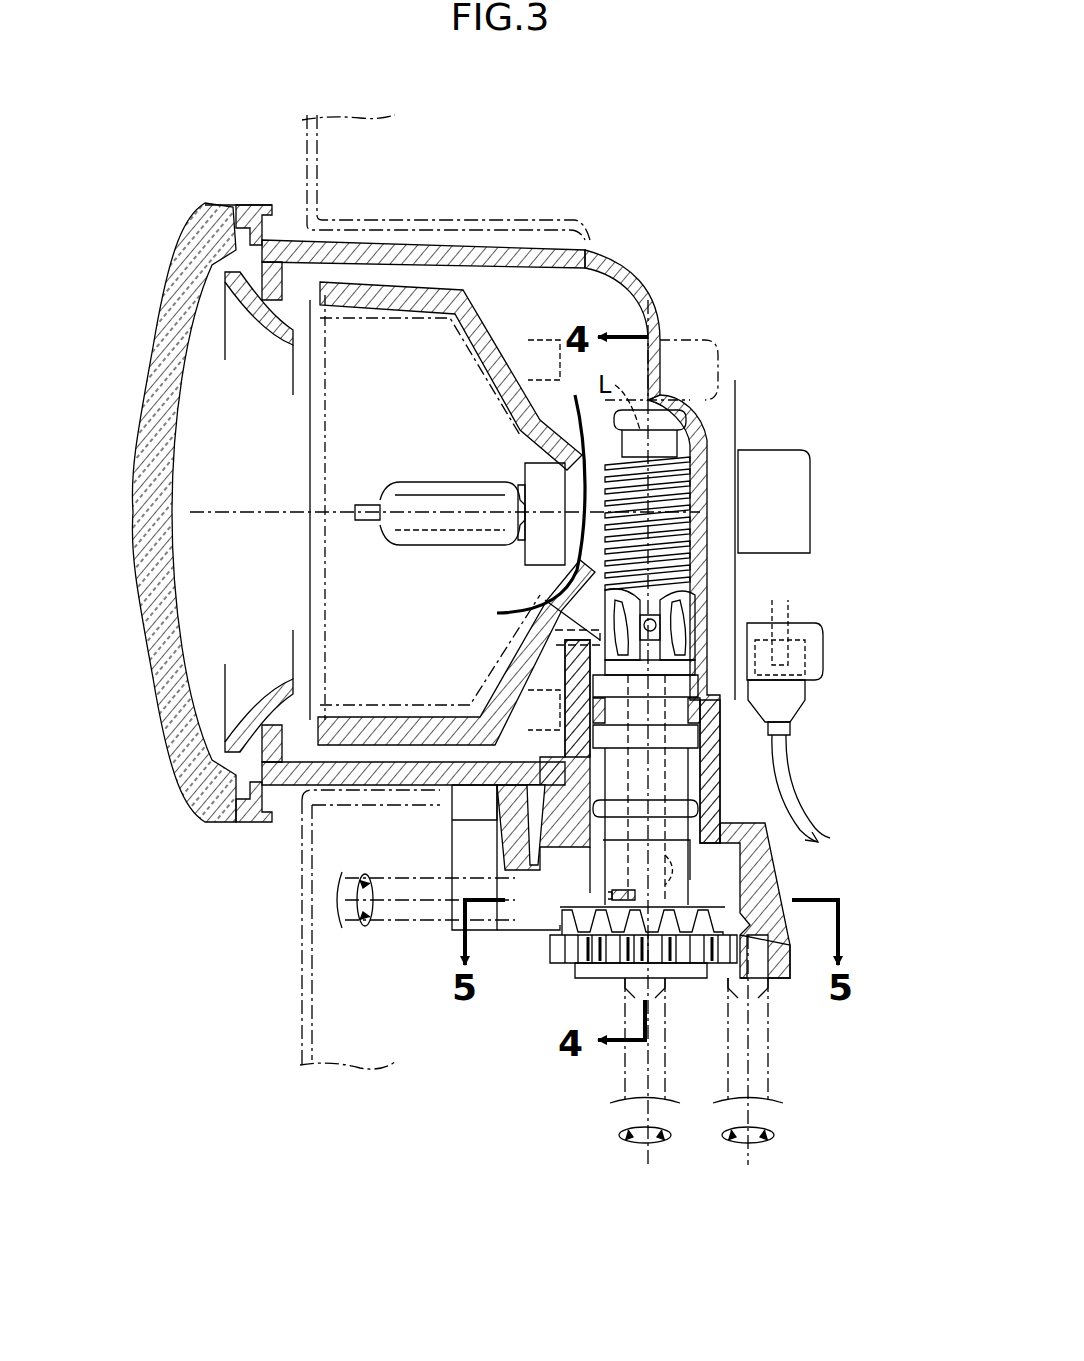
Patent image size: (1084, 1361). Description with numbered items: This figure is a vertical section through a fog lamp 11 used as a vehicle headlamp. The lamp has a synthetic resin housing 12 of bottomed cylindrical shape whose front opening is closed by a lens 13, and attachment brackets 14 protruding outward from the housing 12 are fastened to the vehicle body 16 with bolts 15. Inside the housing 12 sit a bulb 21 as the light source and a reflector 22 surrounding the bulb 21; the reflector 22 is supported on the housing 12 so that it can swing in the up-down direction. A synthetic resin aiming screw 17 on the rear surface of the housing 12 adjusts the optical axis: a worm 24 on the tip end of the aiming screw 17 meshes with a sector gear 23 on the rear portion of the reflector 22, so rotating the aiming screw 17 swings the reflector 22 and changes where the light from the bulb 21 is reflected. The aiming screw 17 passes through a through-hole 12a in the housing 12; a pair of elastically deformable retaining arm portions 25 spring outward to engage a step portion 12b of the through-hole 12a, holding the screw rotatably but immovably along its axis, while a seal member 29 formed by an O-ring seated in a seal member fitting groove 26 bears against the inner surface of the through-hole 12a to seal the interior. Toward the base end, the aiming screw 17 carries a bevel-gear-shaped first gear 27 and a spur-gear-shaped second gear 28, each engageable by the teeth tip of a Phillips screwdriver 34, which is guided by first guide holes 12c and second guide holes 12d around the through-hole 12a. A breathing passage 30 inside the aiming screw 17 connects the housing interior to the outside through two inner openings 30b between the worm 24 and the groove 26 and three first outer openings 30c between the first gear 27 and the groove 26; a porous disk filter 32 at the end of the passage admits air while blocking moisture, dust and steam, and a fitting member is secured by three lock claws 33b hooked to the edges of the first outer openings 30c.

The fog lamp 11 is at (213, 183).
The housing 12 is at (500, 246).
The through-hole 12a is at (708, 790).
The step portion 12b is at (700, 640).
The first guide holes 12c is at (545, 898).
The second guide holes 12d is at (755, 960).
The lens 13 is at (150, 432).
The attachment brackets 14 is at (595, 262).
The bolts 15 is at (538, 335).
The vehicle body 16 is at (300, 950).
The aiming screw 17 is at (700, 500).
The bulb 21 is at (430, 490).
The reflector 22 is at (408, 308).
The sector gear 23 is at (655, 475).
The worm 24 is at (692, 522).
The retaining arm portions 25 is at (690, 612).
The seal member fitting groove 26 is at (718, 705).
The first gear 27 is at (735, 912).
The second gear 28 is at (700, 965).
The seal member 29 is at (700, 710).
The breathing passage 30 is at (682, 868).
The inner openings 30b is at (600, 552).
The first outer openings 30c is at (600, 940).
The filter 32 is at (625, 890).
The lock claws 33b is at (625, 950).
The Phillips screwdriver 34 is at (428, 925).